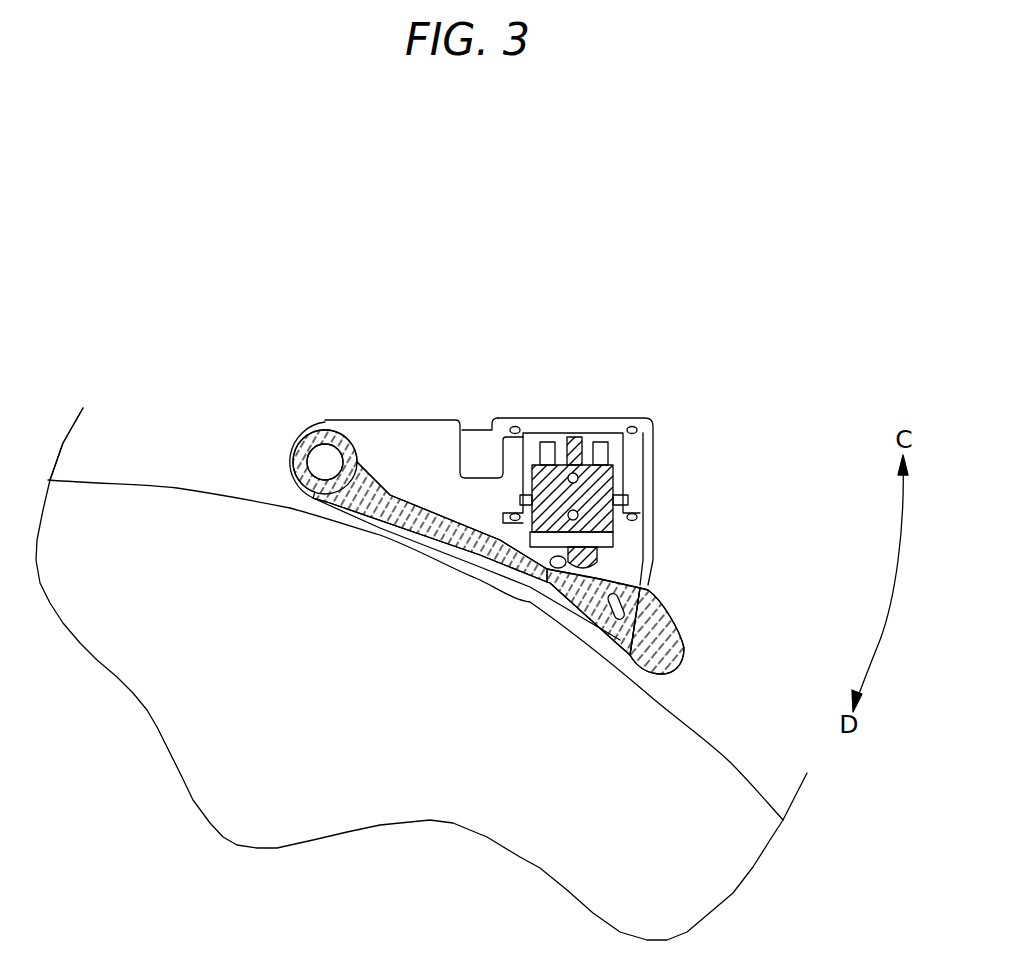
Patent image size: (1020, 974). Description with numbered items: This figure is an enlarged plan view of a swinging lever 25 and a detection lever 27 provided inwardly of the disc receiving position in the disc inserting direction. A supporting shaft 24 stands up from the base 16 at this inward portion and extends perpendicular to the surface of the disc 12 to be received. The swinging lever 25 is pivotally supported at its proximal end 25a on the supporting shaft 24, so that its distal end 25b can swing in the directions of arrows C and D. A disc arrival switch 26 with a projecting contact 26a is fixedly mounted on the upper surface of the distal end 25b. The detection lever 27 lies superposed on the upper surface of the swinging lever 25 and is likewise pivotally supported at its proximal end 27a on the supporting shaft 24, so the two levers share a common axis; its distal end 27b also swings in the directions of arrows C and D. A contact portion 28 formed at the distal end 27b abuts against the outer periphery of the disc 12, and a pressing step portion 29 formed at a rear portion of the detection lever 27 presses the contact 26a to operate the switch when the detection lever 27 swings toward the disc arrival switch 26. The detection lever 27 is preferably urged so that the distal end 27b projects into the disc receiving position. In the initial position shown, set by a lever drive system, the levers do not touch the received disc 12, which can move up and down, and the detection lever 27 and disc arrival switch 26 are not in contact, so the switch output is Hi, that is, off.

The disc 12 is at (733, 762).
The base 16 is at (140, 423).
The supporting shaft 24 is at (318, 447).
The swinging lever 25 is at (519, 485).
The proximal end of the swinging lever 25a is at (402, 425).
The distal end of the swinging lever 25b is at (653, 442).
The disc arrival switch 26 is at (622, 470).
The contact 26a is at (613, 540).
The detection lever 27 is at (532, 572).
The proximal end of the detection lever 27a is at (358, 510).
The distal end of the detection lever 27b is at (610, 648).
The contact portion 28 is at (683, 650).
The pressing step portion 29 is at (552, 568).